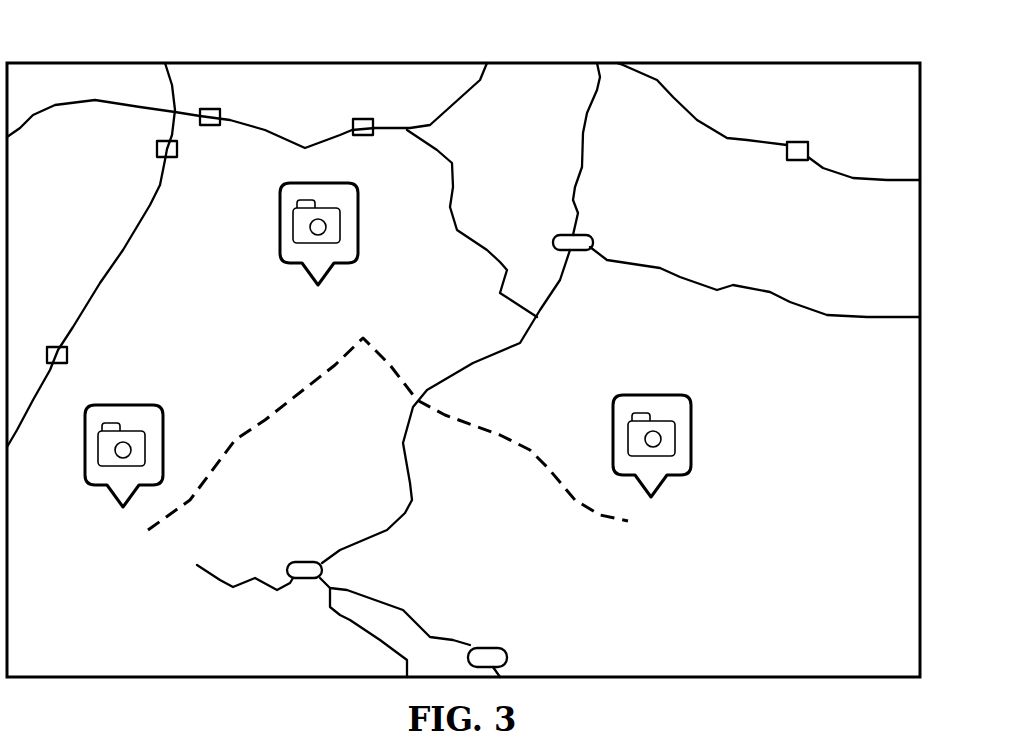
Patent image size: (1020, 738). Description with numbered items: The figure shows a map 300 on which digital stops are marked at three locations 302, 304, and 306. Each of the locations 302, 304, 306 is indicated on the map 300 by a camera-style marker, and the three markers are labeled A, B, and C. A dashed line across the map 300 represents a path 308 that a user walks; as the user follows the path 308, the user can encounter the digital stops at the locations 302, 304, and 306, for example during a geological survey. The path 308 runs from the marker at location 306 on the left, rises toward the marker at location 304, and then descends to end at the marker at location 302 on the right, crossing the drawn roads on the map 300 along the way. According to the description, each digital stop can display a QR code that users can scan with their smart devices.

The map 300 is at (134, 60).
The location 302 is at (674, 568).
The location 304 is at (287, 357).
The location 306 is at (145, 580).
The path 308 is at (465, 423).